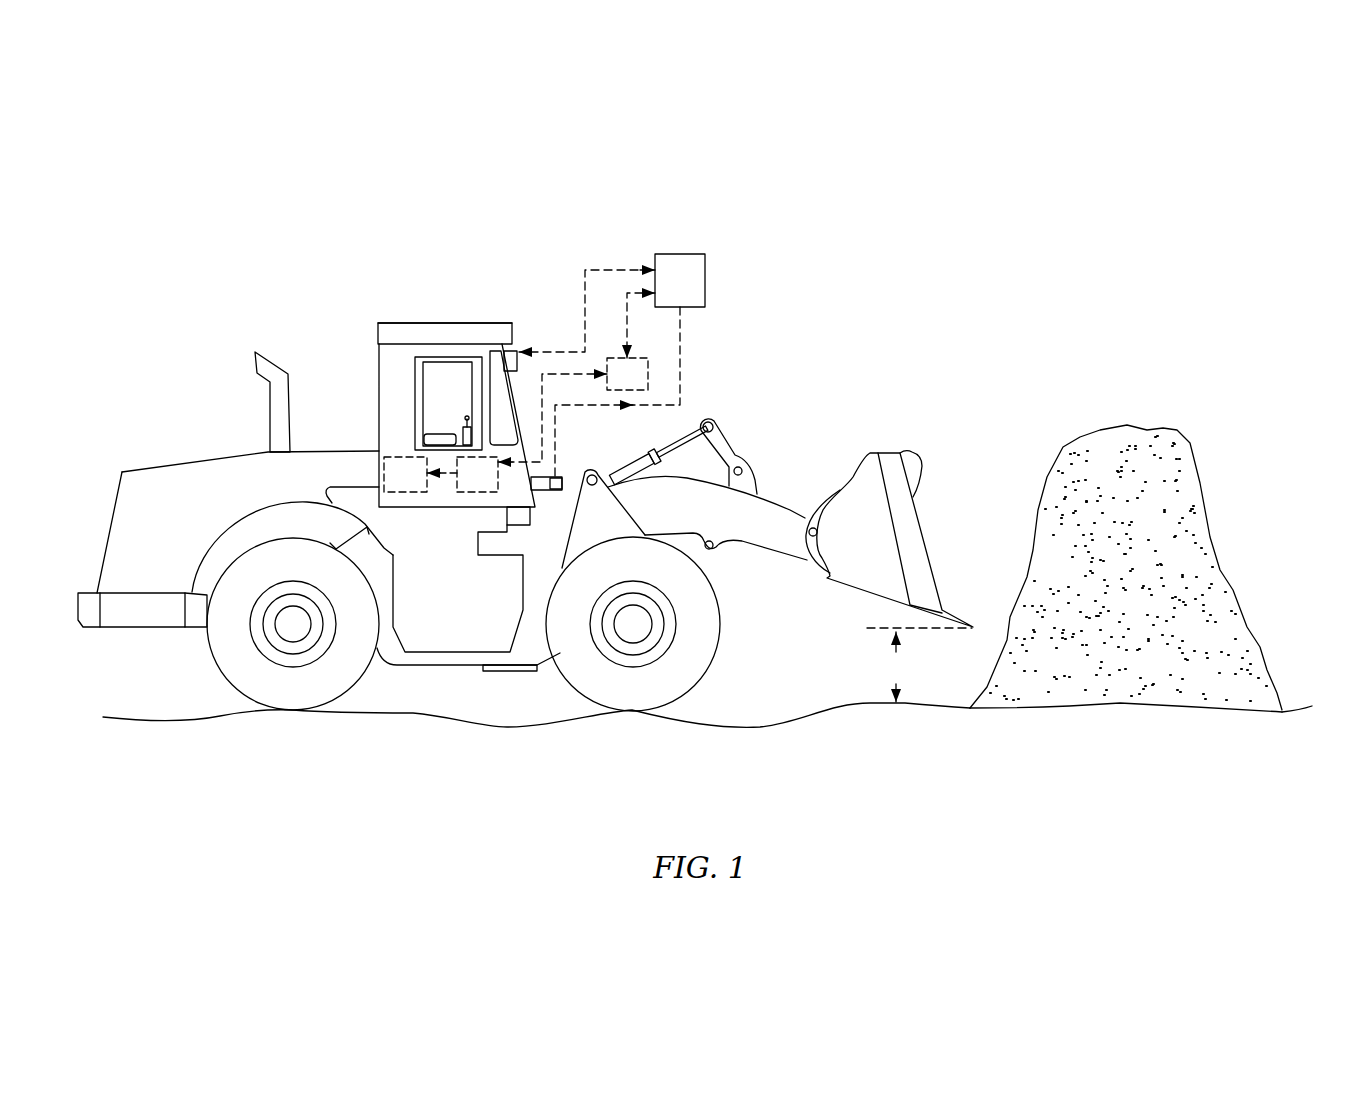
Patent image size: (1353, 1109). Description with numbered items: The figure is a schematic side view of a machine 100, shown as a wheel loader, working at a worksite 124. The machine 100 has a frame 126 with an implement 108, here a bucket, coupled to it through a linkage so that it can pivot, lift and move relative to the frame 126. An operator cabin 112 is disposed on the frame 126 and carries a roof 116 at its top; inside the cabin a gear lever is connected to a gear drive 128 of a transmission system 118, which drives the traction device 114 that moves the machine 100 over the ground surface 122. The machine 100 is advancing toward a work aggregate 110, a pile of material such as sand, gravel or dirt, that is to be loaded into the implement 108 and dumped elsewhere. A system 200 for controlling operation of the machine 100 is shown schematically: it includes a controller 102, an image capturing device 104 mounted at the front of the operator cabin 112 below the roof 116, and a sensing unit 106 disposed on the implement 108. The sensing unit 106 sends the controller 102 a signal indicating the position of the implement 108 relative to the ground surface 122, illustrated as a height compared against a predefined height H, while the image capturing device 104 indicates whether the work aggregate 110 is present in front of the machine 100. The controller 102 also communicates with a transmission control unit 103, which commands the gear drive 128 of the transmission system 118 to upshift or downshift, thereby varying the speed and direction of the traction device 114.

The machine 100 is at (525, 520).
The controller 102 is at (680, 280).
The transmission control unit 103 is at (627, 374).
The image capturing device 104 is at (518, 367).
The sensing unit 106 is at (567, 480).
The implement 108 is at (888, 452).
The work aggregate 110 is at (1132, 425).
The operator cabin 112 is at (379, 376).
The traction device 114 is at (217, 668).
The roof 116 is at (458, 322).
The transmission system 118 is at (477, 474).
The ground surface 122 is at (773, 705).
The worksite 124 is at (880, 220).
The frame 126 is at (528, 647).
The gear drive 128 is at (420, 474).
The system 200 is at (655, 353).